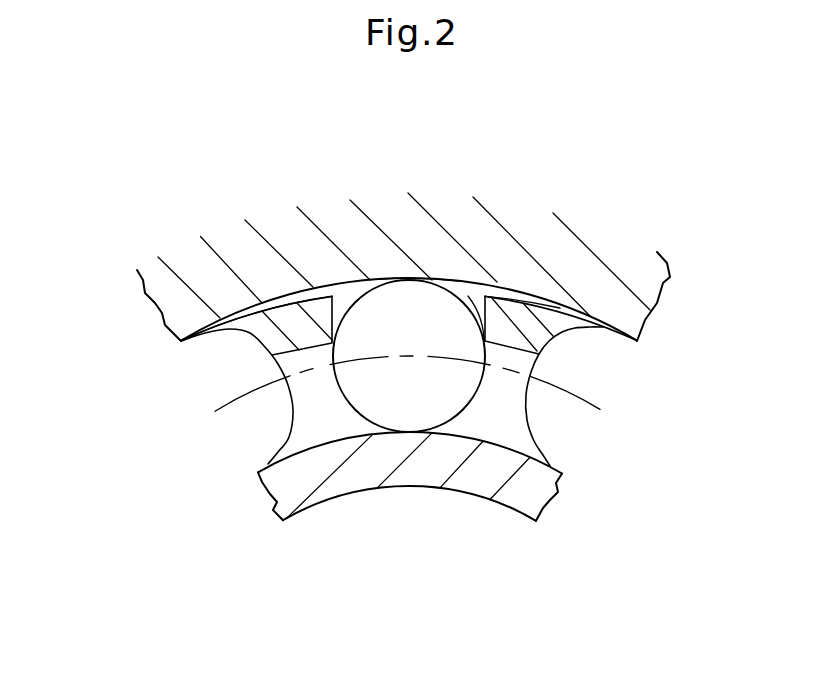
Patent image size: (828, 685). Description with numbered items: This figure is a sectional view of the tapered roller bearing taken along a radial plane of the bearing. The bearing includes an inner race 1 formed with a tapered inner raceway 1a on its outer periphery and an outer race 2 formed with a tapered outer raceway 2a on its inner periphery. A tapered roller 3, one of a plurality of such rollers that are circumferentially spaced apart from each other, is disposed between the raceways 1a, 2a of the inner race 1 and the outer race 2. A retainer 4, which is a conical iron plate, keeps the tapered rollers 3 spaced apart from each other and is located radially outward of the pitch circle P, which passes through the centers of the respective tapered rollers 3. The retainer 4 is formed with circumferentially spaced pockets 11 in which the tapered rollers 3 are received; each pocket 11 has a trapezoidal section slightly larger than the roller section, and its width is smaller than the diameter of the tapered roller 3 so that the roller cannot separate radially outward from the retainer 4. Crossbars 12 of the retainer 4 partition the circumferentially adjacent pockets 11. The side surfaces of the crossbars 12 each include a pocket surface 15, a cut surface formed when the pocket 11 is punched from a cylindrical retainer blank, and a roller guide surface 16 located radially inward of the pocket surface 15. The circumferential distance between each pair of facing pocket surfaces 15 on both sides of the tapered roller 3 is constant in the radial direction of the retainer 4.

The inner race 1 is at (288, 488).
The tapered inner raceway 1a is at (278, 443).
The outer race 2 is at (177, 293).
The tapered outer raceway 2a is at (218, 321).
The tapered roller 3 is at (393, 410).
The retainer 4 is at (283, 298).
The pocket 11 is at (345, 302).
The crossbar 12 is at (516, 308).
The pocket surface 15 is at (458, 294).
The roller guide surface 16 is at (473, 333).
The pitch circle P is at (575, 393).